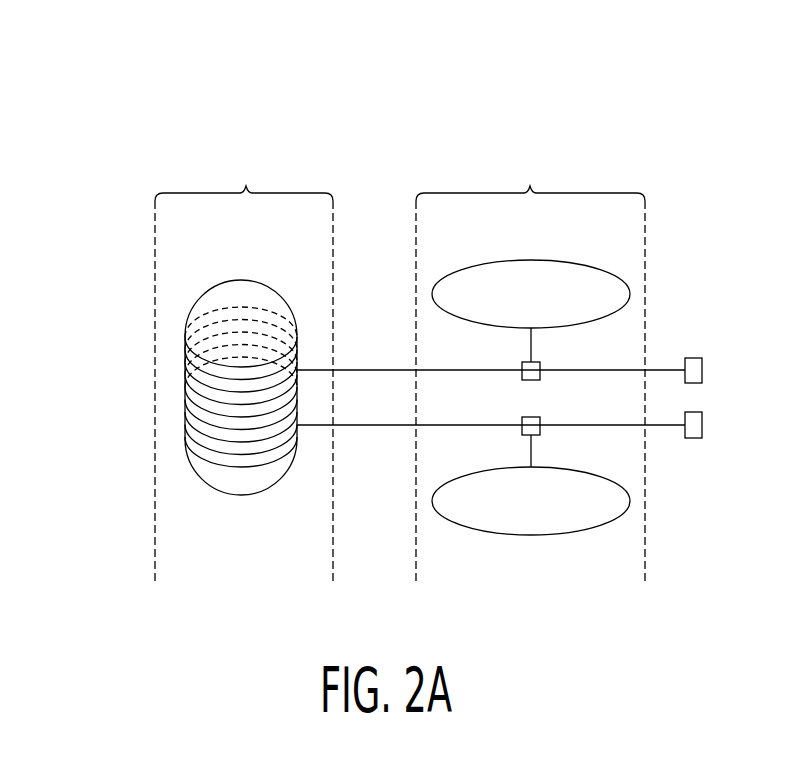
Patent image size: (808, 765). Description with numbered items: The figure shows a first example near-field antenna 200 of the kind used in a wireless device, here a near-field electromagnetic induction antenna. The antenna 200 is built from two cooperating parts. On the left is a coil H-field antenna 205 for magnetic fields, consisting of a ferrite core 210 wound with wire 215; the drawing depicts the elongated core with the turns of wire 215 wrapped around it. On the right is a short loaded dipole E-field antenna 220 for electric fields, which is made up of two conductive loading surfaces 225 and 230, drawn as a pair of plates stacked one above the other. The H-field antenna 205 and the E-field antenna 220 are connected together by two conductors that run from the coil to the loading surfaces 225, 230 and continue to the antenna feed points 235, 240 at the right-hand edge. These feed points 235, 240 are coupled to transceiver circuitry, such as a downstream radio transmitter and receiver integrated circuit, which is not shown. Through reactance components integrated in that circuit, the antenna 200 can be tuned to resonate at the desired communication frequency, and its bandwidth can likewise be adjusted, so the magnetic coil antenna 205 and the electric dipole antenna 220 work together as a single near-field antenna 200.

The near-field antenna 200 is at (186, 90).
The coil (H-field) antenna 205 is at (244, 365).
The ferrite core 210 is at (262, 280).
The wire 215 is at (254, 482).
The short loaded dipole (E-field) antenna 220 is at (530, 365).
The conductive loading surface 225 is at (551, 307).
The conductive loading surface 230 is at (551, 514).
The feed point 235 is at (703, 370).
The feed point 240 is at (703, 425).